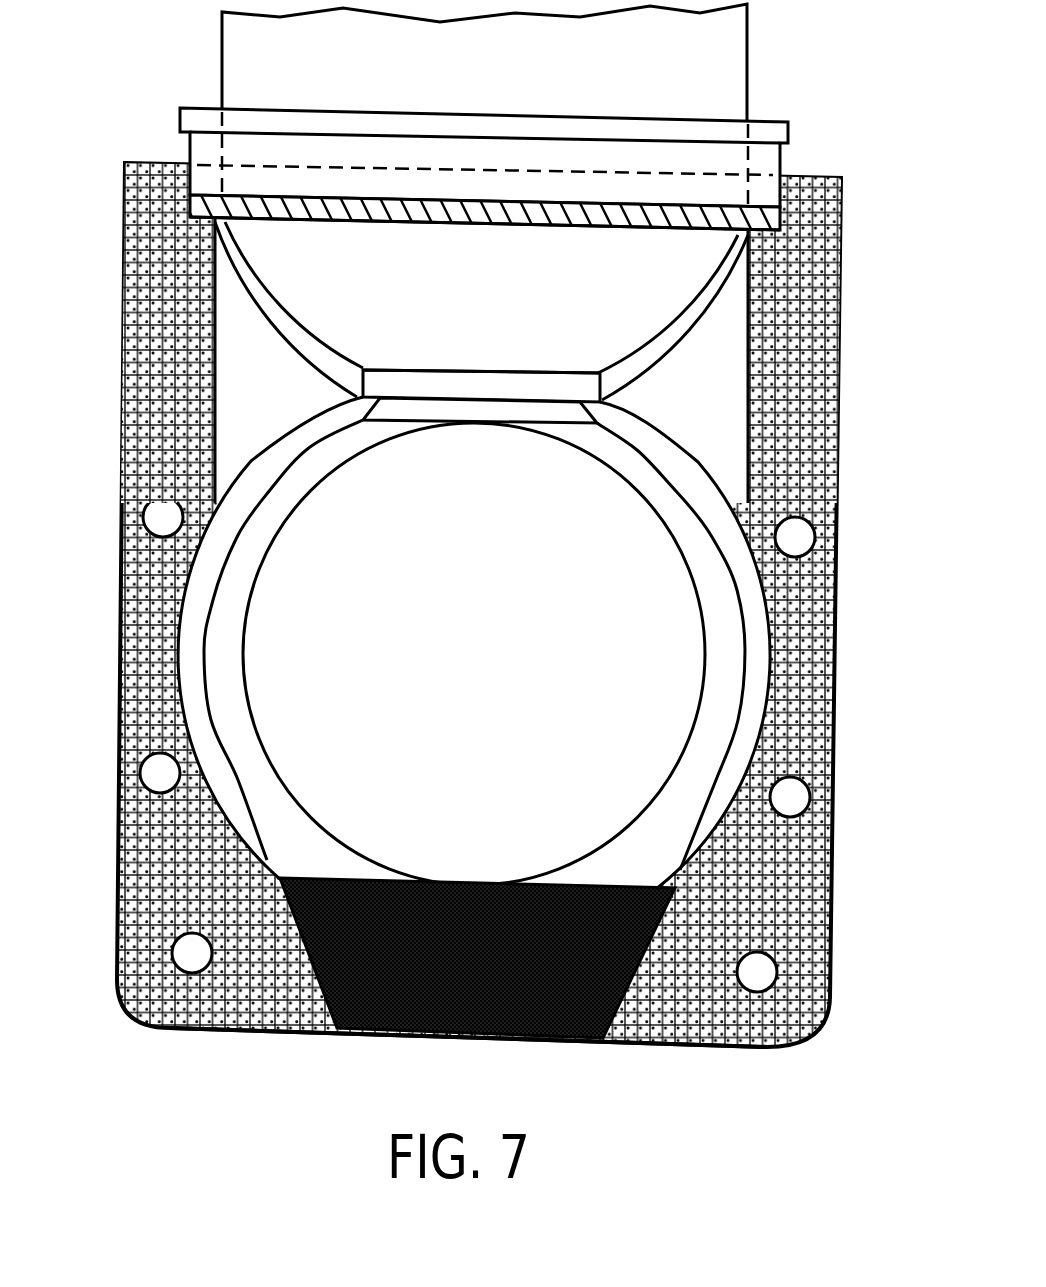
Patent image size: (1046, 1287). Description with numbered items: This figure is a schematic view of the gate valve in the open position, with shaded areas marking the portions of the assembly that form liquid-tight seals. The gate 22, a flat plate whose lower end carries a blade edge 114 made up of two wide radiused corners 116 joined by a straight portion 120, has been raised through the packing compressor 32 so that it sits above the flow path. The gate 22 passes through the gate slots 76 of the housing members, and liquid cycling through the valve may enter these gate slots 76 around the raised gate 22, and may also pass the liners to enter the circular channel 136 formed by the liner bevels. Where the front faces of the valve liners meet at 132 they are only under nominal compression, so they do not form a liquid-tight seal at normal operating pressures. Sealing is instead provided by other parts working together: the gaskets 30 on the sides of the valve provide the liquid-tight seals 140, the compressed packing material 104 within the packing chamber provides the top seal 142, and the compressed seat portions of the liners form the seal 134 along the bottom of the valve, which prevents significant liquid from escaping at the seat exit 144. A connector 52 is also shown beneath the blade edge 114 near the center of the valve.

The gate 22 is at (750, 62).
The packing compressor 32 is at (780, 163).
The gasket 30 is at (120, 690).
The liquid-tight seal 140 is at (150, 378).
The gate slot 76 is at (260, 413).
The top seal 142 is at (345, 213).
The packing material 104 is at (655, 230).
The radiused corner 116 is at (260, 313).
The blade edge 114 is at (397, 367).
The straight portion 120 is at (530, 368).
The connector block 52 is at (472, 410).
The circular channel 136 is at (273, 462).
The front face contact 132 is at (247, 547).
The seat portions seal 134 is at (495, 970).
The seat exit 144 is at (415, 1037).